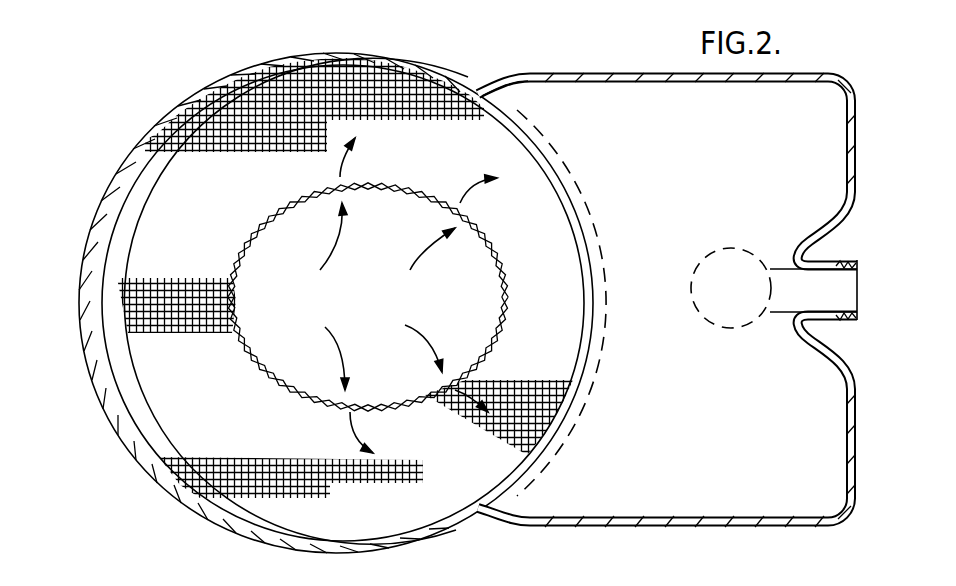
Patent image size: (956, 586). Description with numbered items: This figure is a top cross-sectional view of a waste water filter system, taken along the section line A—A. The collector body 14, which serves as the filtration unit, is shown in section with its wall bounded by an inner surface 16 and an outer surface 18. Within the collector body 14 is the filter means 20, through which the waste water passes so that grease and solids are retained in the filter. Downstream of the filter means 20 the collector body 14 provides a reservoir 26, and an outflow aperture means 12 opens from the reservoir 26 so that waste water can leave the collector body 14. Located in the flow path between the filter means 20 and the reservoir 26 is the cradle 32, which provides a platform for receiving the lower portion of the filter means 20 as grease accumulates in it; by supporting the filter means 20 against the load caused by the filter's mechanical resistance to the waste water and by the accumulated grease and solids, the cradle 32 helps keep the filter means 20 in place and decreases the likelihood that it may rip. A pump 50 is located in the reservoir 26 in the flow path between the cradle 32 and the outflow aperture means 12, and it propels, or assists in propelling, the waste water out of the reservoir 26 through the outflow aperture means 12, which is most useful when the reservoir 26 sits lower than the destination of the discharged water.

The outflow aperture means 12 is at (830, 262).
The collector body 14 is at (522, 73).
The inner surface 16 is at (690, 83).
The outer surface 18 is at (698, 73).
The filter means 20 is at (265, 248).
The reservoir 26 is at (595, 98).
The cradle 32 is at (187, 130).
The pump 50 is at (733, 318).
The section line A— A is at (85, 258).